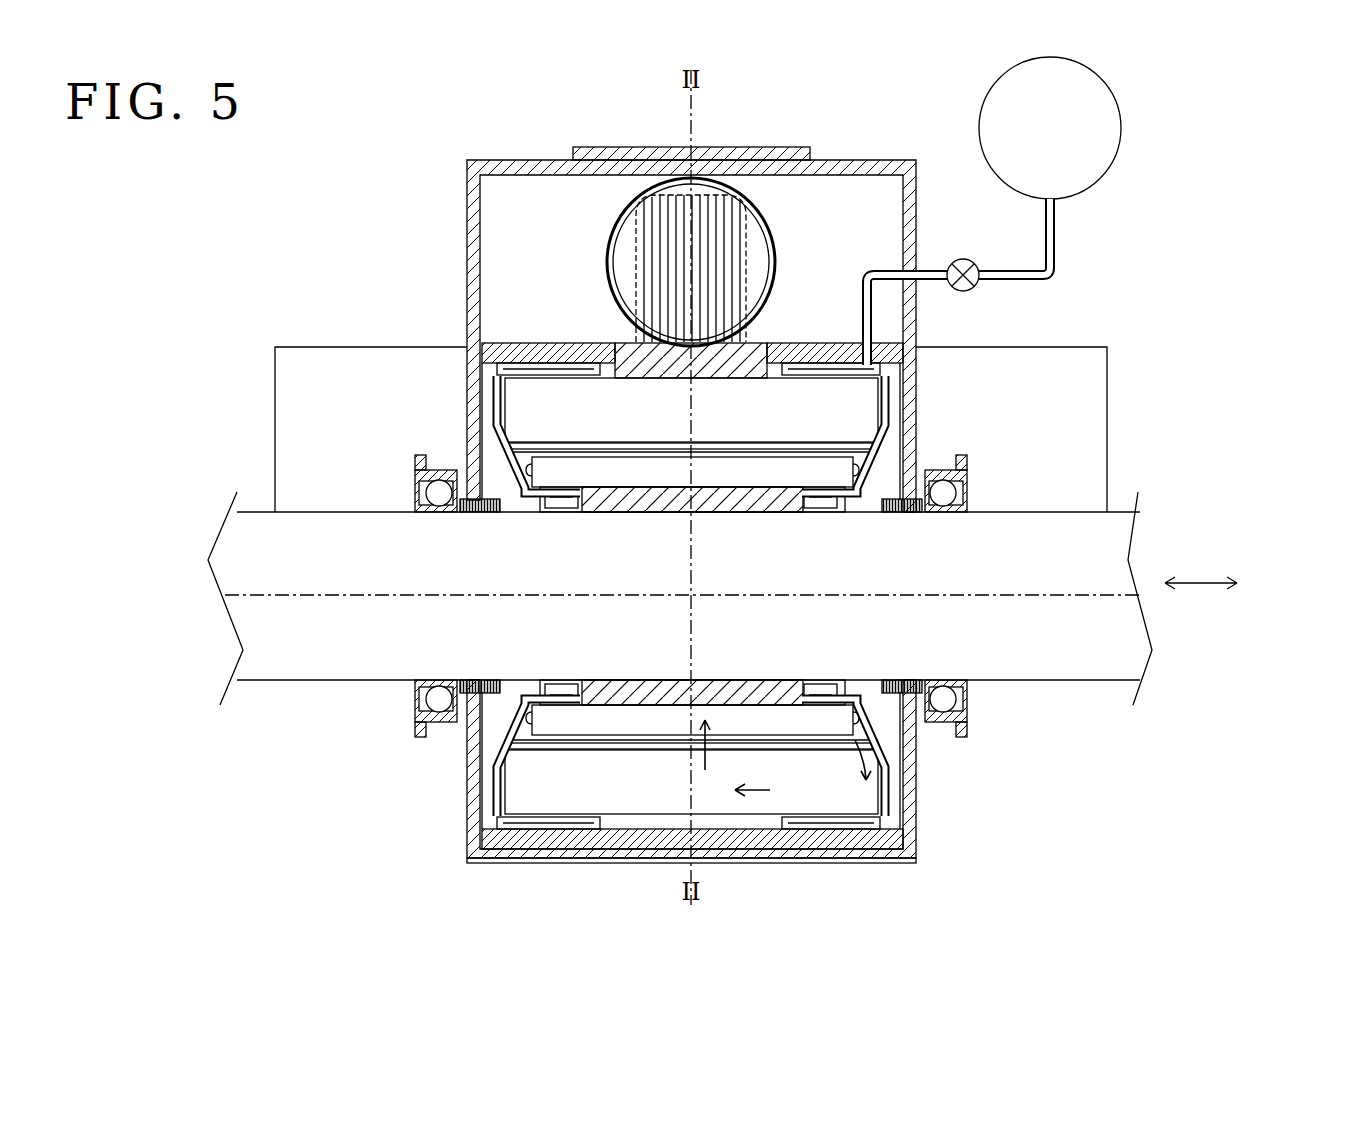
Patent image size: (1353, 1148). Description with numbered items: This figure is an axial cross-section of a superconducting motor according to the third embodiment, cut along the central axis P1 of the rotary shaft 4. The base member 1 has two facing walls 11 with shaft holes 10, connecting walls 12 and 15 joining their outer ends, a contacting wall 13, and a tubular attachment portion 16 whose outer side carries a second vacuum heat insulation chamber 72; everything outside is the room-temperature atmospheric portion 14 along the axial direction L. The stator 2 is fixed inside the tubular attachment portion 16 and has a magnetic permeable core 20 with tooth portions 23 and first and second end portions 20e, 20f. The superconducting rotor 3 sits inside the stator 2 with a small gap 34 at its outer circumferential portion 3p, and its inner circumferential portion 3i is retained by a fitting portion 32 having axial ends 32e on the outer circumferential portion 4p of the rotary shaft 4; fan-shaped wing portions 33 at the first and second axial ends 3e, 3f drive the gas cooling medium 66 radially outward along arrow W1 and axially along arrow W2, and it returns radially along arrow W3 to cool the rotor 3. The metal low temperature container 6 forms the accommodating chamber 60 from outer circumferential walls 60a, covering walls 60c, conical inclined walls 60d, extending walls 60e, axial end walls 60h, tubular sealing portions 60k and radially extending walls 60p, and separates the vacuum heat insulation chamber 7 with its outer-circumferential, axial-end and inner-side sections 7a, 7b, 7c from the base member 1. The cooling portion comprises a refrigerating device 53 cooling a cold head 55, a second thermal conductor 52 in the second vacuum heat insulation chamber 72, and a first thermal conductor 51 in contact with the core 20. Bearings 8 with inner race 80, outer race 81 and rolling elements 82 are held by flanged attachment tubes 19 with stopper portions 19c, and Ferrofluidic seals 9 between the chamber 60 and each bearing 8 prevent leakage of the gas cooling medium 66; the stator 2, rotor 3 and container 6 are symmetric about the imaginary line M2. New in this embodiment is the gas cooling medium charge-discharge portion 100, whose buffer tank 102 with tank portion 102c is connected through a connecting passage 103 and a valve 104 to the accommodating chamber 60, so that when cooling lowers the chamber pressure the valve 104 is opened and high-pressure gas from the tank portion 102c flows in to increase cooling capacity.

The base member 1 is at (312, 868).
The stator 2 is at (470, 268).
The rotor 3 is at (485, 342).
The first axial end of the rotor 3e is at (806, 474).
The second axial end of the rotor 3f is at (552, 474).
The inner circumferential portion of the rotor 3i is at (702, 505).
The outer circumferential portion of the rotor 3p is at (650, 442).
The rotary shaft 4 is at (292, 512).
The outer circumferential portion of the rotary shaft 4p is at (330, 510).
The low temperature container 6 is at (915, 348).
The vacuum heat insulation chamber 7 is at (485, 450).
The outer-circumferential heat insulation chamber 7a is at (555, 362).
The axial-end heat insulation chamber 7b is at (905, 392).
The inner-side heat insulation chamber 7c is at (560, 690).
The bearing 8 is at (1070, 450).
The Ferrofluidic seal 9 is at (470, 512).
The shaft hole 10 is at (418, 498).
The facing wall 11 is at (467, 212).
The connecting wall 12 is at (492, 160).
The contacting wall 13 is at (790, 147).
The atmospheric portion 14 is at (1250, 506).
The connecting wall 15 is at (712, 863).
The tubular attachment portion 16 is at (905, 338).
The flanged attachment tube 19 is at (470, 762).
The stopper portion 19c is at (962, 470).
The magnetic permeable core 20 is at (585, 375).
The first end portion of the magnetic permeable core 20e is at (868, 408).
The second end portion of the magnetic permeable core 20f is at (534, 420).
The tooth portion 23 is at (708, 402).
The fitting portion 32 is at (745, 512).
The axial end of the fitting portion 32e is at (640, 505).
The wing portion 33 is at (500, 440).
The gap 34 is at (728, 448).
The first thermal conductor 51 is at (625, 345).
The second thermal conductor 52 is at (745, 325).
The refrigerating device 53 is at (775, 240).
The cold head 55 is at (762, 252).
The accommodating chamber 60 is at (930, 410).
The outer circumferential wall 60a is at (852, 362).
The covering wall 60c is at (484, 386).
The inclined wall 60d is at (490, 470).
The extending wall 60e is at (556, 508).
The axial end wall 60h is at (598, 500).
The tubular sealing portion 60k is at (880, 508).
The extending wall 60p is at (480, 352).
The gas cooling medium 66 is at (900, 377).
The second vacuum heat insulation chamber 72 is at (562, 215).
The inner race 80 is at (950, 496).
The outer race 81 is at (950, 478).
The rolling element 82 is at (968, 497).
The gas cooling medium charge-discharge portion 100 is at (1144, 126).
The buffer tank 102 is at (1087, 176).
The tank portion 102c is at (1100, 150).
The connecting passage 103 is at (1058, 262).
The valve 104 is at (970, 288).
The arrow indicating axial direction L is at (1201, 614).
The central axis P1 is at (585, 593).
The imaginary line M2 is at (700, 128).
The arrow indicating radially outward flow W1 is at (862, 769).
The arrow indicating axial flow W2 is at (770, 790).
The arrow indicating radial return flow W3 is at (735, 752).